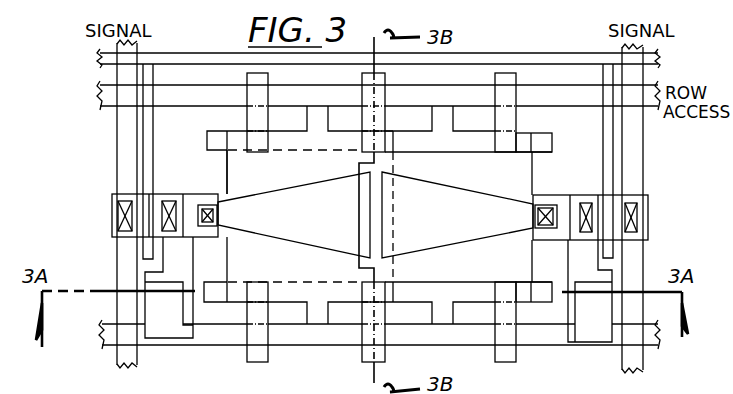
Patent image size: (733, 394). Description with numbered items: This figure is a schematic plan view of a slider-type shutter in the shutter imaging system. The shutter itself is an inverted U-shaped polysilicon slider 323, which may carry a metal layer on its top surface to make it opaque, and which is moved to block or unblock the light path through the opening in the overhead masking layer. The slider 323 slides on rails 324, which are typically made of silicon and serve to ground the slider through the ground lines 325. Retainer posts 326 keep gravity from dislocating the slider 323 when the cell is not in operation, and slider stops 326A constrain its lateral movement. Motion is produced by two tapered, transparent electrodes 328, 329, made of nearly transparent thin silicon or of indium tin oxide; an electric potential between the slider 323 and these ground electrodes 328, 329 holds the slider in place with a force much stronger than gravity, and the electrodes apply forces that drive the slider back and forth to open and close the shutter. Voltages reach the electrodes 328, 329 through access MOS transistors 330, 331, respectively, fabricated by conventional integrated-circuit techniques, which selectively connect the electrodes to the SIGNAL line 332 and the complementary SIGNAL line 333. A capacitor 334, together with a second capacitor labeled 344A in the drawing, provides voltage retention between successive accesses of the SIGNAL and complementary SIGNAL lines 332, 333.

The polysilicon slider 323 is at (231, 176).
The rails 324 is at (303, 148).
The ground lines 325 is at (199, 93).
The retainer posts 326 is at (262, 351).
The slider stops 326A is at (207, 137).
The tapered transparent electrode 328 is at (329, 236).
The tapered transparent electrode 329 is at (435, 236).
The access MOS transistor 330 is at (146, 232).
The access MOS transistor 331 is at (610, 203).
The SIGNAL line 332 is at (125, 147).
The complementary SIGNAL line 333 is at (633, 146).
The capacitor 334 is at (157, 314).
The contact region 344A is at (590, 318).